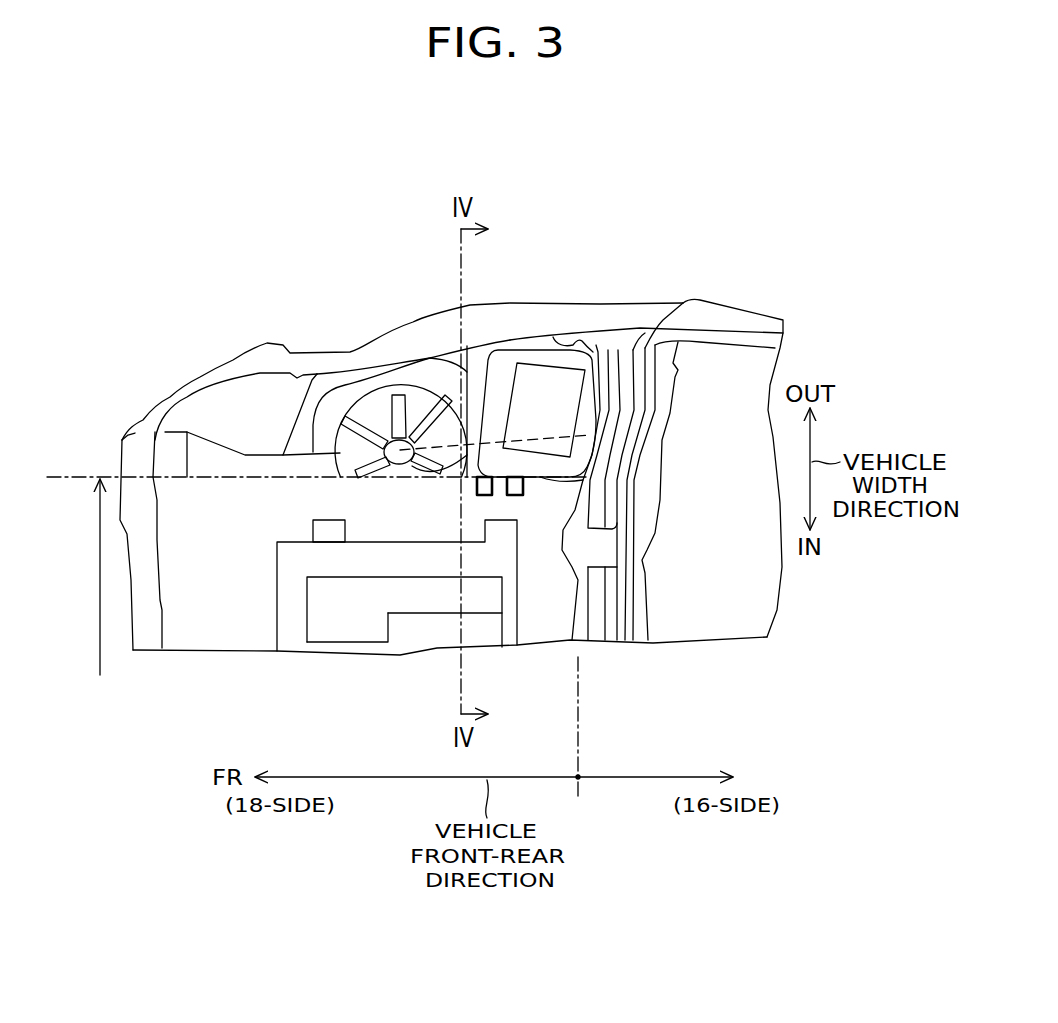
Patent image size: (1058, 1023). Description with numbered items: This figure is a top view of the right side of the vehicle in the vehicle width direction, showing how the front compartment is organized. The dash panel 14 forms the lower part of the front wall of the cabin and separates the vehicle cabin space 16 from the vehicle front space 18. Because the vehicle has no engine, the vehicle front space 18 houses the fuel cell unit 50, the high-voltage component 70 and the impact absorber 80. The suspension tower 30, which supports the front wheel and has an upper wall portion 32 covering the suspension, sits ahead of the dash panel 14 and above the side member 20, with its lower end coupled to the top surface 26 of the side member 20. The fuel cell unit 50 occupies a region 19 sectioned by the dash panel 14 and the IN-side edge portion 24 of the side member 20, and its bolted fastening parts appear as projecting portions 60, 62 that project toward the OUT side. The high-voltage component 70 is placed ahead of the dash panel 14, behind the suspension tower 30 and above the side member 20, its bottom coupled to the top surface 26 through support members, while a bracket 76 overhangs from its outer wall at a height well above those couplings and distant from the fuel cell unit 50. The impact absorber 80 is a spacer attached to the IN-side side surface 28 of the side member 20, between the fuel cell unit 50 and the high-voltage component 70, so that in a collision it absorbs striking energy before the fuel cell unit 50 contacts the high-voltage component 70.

The dash panel 14 is at (588, 630).
The vehicle cabin space 16 is at (727, 519).
The vehicle front space 18 is at (230, 564).
The region 19 is at (98, 620).
The side member 20 is at (138, 478).
The IN-side edge portion 24 is at (73, 476).
The top surface 26 is at (223, 470).
The IN-side side surface 28 is at (150, 510).
The suspension tower 30 is at (341, 386).
The upper wall portion 32 is at (417, 412).
The fuel cell unit 50 is at (343, 632).
The projecting portion 60 is at (505, 532).
The projecting portion 62 is at (320, 530).
The high-voltage component 70 is at (525, 342).
The bracket 76 is at (568, 482).
The impact absorber 80 is at (500, 492).